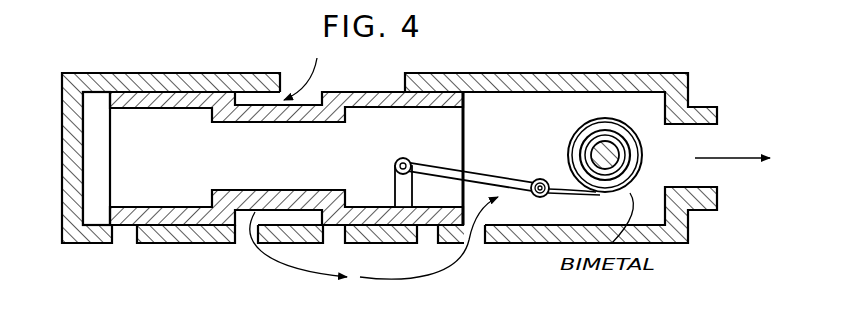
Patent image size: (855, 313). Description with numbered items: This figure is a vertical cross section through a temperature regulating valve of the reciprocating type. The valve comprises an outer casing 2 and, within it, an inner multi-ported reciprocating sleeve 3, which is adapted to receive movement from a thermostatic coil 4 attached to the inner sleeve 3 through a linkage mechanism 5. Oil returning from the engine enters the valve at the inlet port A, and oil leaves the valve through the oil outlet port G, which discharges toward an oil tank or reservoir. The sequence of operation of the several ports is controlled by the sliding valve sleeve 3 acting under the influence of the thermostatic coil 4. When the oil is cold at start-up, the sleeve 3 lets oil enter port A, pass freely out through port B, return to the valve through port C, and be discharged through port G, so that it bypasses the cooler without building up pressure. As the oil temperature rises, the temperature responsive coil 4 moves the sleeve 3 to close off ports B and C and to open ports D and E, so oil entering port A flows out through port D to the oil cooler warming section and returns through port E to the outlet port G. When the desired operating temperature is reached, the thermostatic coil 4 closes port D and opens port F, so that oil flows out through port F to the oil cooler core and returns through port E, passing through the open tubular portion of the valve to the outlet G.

The outer casing 2 is at (166, 80).
The inner multi-ported reciprocating sleeve 3 is at (146, 209).
The thermostatic coil 4 is at (568, 148).
The linkage mechanism 5 is at (440, 168).
The inlet port A is at (337, 84).
The port B is at (242, 237).
The port C is at (483, 237).
The port D is at (336, 237).
The port E is at (125, 237).
The port F is at (427, 237).
The oil outlet port G is at (672, 175).